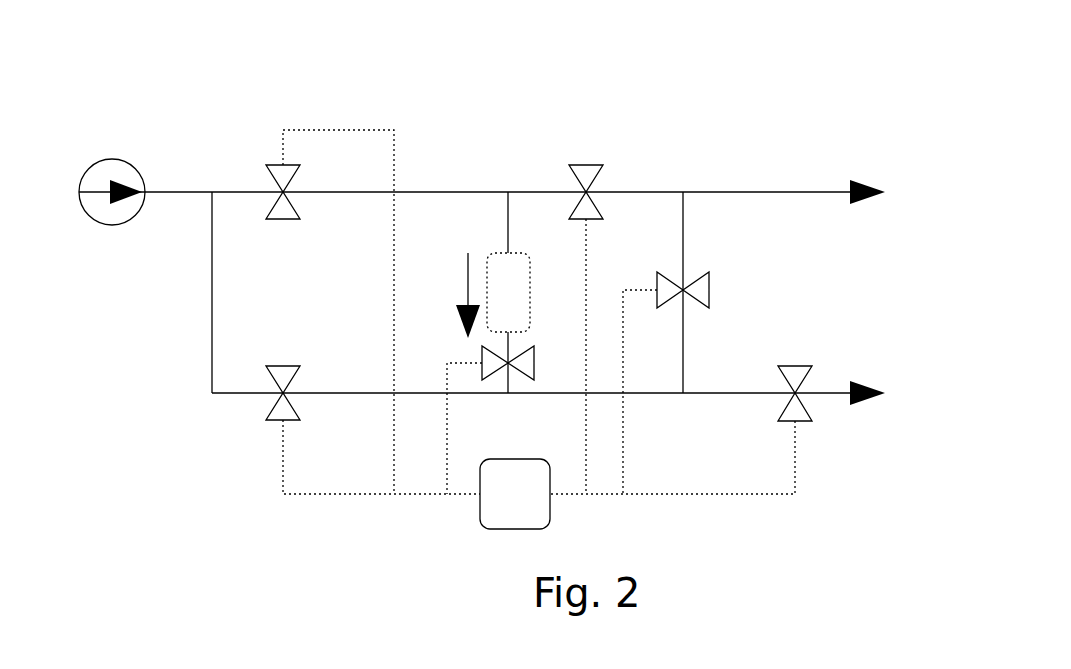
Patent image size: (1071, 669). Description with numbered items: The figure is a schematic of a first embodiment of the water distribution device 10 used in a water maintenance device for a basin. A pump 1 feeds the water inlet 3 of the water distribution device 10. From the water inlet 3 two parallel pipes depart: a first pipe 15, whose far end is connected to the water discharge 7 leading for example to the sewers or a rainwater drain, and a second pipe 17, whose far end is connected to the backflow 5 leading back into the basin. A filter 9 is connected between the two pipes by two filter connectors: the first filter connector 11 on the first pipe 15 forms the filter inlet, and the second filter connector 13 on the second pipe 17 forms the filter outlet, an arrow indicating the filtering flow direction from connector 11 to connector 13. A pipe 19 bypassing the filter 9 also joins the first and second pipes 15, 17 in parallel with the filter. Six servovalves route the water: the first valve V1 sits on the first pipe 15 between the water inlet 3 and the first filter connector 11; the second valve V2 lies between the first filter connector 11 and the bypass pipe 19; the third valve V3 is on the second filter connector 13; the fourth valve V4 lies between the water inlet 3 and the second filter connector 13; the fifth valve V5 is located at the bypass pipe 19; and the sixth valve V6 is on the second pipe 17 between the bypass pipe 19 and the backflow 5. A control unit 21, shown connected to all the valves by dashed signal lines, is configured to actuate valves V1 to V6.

The water distribution device 10 is at (868, 136).
The pump 1 is at (88, 168).
The water inlet 3 is at (150, 192).
The first pipe 15 is at (428, 192).
The water discharge 7 is at (890, 192).
The first valve V1 is at (276, 165).
The second valve V2 is at (583, 165).
The first filter connector 11 is at (508, 212).
The filter 9 is at (530, 290).
The third valve V3 is at (537, 363).
The second filter connector 13 is at (505, 382).
The second pipe 17 is at (327, 393).
The backflow 5 is at (890, 394).
The fourth valve V4 is at (275, 365).
The pipe bypassing the filter 19 is at (683, 245).
The fifth valve V5 is at (712, 290).
The sixth valve V6 is at (808, 418).
The control unit 21 is at (539, 329).